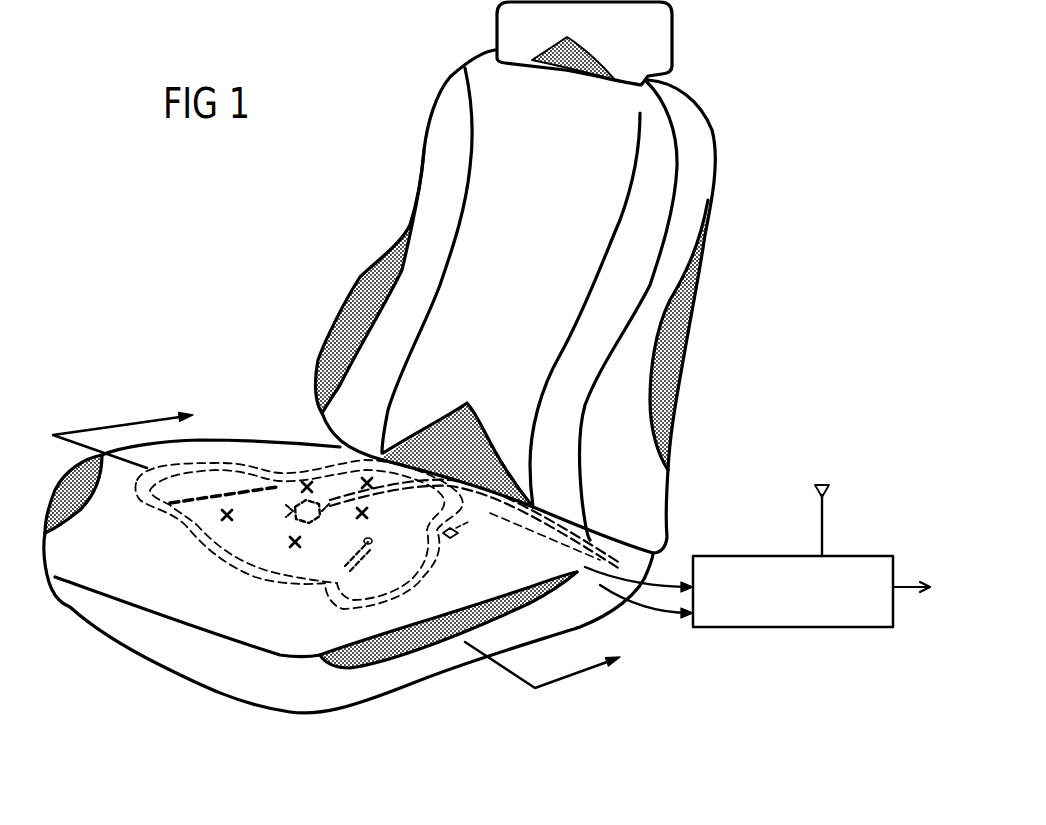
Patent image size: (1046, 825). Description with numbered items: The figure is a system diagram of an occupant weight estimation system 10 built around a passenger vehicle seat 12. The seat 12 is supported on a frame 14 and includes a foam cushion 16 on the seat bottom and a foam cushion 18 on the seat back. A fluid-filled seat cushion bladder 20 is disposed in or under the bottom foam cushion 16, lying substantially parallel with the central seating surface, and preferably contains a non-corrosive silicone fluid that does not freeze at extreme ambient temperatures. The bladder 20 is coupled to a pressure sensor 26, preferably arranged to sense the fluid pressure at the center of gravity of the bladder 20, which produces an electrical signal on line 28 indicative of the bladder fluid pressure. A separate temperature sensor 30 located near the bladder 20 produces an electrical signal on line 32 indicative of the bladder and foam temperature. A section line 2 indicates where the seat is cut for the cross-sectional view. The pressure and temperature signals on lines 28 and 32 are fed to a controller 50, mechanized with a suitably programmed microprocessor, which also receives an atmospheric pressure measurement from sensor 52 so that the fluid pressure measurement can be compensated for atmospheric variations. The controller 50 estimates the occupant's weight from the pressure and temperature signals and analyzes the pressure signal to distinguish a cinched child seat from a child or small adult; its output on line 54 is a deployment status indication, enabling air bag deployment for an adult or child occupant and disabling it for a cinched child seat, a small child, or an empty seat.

The section line 2 is at (336, 545).
The occupant weight estimation system 10 is at (752, 136).
The vehicle seat 12 is at (262, 374).
The frame 14 is at (328, 692).
The foam cushion 16 is at (150, 562).
The foam cushion 18 is at (683, 222).
The seat cushion bladder 20 is at (228, 540).
The pressure sensor 26 is at (292, 513).
The line 28 is at (665, 592).
The temperature sensor 30 is at (457, 540).
The line 32 is at (665, 596).
The controller 50 is at (822, 627).
The atmospheric pressure sensor 52 is at (829, 487).
The output line 54 is at (910, 593).